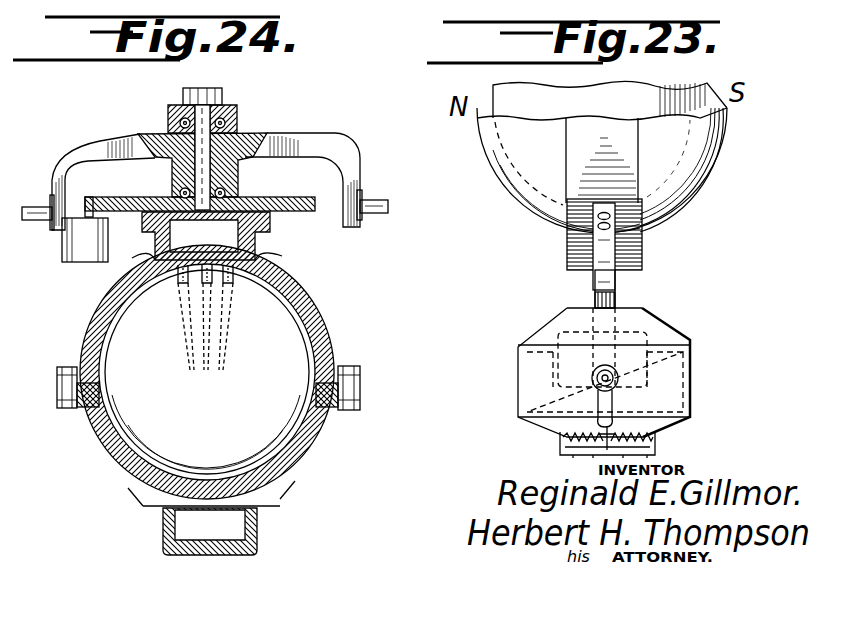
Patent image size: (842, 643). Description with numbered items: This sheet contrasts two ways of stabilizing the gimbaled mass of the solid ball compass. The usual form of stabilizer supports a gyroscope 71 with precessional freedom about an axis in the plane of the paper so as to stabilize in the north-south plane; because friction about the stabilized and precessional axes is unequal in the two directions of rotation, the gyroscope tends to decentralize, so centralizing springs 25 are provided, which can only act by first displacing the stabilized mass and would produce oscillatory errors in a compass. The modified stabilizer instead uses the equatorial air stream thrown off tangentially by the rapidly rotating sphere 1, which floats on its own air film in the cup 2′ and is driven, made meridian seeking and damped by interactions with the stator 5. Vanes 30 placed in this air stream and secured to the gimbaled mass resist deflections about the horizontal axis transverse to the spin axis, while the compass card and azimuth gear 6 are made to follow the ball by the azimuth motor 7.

In FIG. 24, the rotating sphere 1 is at (207, 372).
In FIG. 23, the rotating sphere 1 is at (602, 142).
In FIG. 24, the cup 2′ is at (328, 330).
In FIG. 23, the cup 2′ is at (707, 173).
In FIG. 24, the stator 5 is at (233, 528).
In FIG. 24, the azimuth gear 6 is at (279, 197).
In FIG. 24, the azimuth motor 7 is at (85, 240).
In FIG. 24, the vanes 30 is at (225, 318).
In FIG. 23, the gyroscope 71 is at (640, 322).
In FIG. 23, the centralizing springs 25 is at (560, 447).